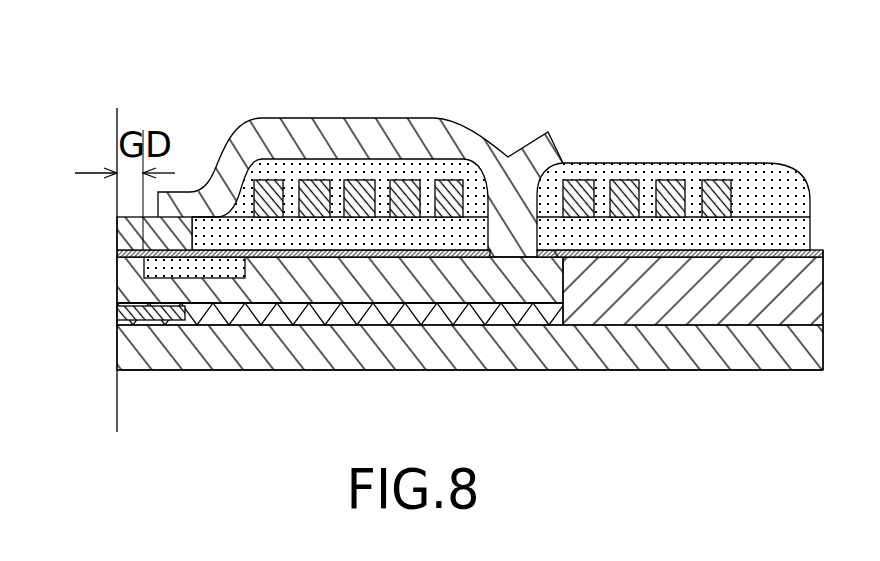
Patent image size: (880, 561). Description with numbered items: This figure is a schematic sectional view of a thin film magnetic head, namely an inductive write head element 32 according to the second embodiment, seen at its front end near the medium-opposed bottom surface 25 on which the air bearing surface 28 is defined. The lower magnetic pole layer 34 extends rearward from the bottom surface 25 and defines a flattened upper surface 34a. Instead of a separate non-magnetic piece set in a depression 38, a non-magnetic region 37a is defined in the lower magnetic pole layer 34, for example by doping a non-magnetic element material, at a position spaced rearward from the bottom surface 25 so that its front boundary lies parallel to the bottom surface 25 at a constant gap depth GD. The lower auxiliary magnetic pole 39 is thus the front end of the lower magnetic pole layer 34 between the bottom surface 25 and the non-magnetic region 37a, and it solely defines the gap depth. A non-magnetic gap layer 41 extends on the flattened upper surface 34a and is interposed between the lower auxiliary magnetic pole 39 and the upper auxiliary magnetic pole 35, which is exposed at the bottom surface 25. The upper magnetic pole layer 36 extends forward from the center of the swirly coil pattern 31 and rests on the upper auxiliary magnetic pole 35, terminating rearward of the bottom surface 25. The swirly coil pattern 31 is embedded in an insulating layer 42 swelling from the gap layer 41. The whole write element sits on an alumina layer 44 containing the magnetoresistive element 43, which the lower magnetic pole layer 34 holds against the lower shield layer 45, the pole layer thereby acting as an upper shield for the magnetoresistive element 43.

The bottom surface 25 is at (117, 423).
The air bearing surface 28 is at (115, 123).
The swirly coil pattern 31 is at (313, 181).
The inductive write head element 32 is at (694, 104).
The lower magnetic pole layer 34 is at (253, 303).
The flattened upper surface 34a is at (280, 258).
The upper auxiliary magnetic pole 35 is at (117, 218).
The upper magnetic pole layer 36 is at (244, 125).
The non-magnetic region 37a is at (193, 278).
The depression 38 is at (148, 280).
The lower auxiliary magnetic pole 39 is at (123, 272).
The non-magnetic gap layer 41 is at (117, 253).
The insulating layer 42 is at (450, 162).
The magnetoresistive element 43 is at (118, 315).
The alumina layer 44 is at (600, 323).
The lower shield layer 45 is at (428, 370).